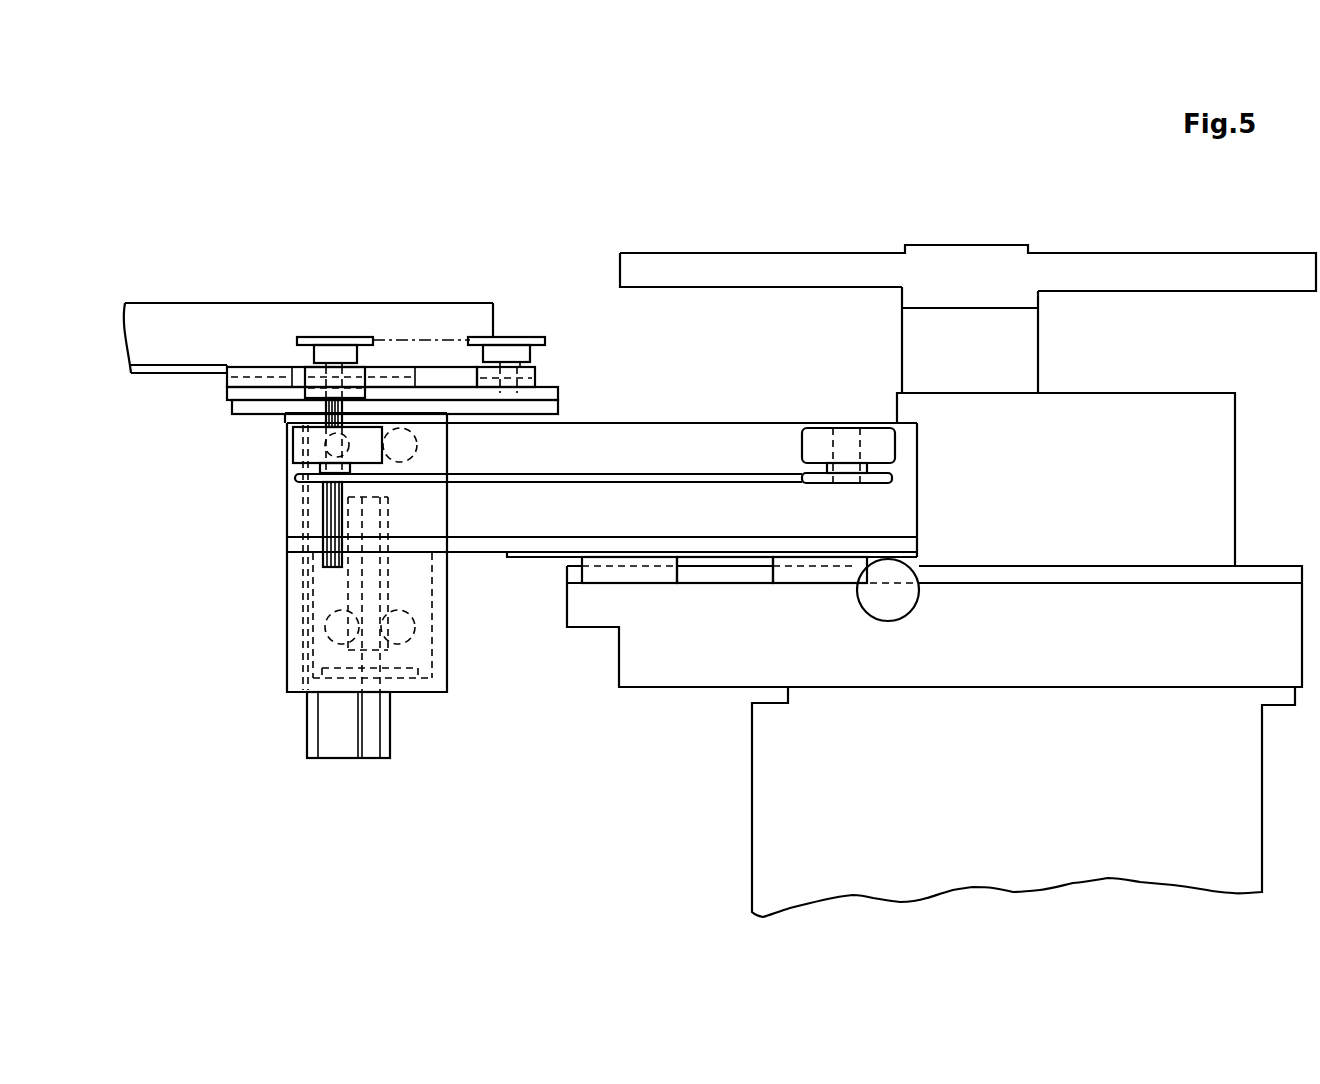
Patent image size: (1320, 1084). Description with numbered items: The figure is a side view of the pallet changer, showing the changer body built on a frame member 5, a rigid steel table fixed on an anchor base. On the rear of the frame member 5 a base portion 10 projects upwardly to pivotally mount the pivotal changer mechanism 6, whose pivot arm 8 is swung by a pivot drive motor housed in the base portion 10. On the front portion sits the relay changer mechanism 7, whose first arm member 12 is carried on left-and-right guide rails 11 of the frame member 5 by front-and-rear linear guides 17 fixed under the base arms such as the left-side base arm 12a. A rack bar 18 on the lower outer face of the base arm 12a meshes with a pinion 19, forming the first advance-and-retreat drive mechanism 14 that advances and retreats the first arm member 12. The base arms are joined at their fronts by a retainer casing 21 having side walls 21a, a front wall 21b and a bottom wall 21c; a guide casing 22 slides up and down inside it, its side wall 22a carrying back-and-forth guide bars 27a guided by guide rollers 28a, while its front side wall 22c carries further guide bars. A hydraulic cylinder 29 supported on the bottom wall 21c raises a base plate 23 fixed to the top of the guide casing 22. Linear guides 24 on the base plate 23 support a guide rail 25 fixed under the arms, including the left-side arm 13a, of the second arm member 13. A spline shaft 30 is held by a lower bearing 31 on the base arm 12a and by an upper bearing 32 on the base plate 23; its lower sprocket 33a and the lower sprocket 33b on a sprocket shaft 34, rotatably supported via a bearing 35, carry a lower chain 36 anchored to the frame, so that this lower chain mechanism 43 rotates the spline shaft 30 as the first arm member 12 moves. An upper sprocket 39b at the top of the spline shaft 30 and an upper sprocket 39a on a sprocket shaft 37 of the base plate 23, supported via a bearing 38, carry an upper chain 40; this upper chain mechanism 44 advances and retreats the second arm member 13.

The frame member 5 is at (752, 789).
The pivotal changer mechanism 6 is at (1058, 247).
The relay changer mechanism 7 is at (460, 284).
The pivot arm 8 is at (797, 253).
The base portion 10 is at (1133, 400).
The guide rails 11 is at (1133, 568).
The first arm member 12 is at (926, 458).
The left-side base arm 12a is at (722, 423).
The second arm member 13 is at (496, 328).
The left-side arm 13a is at (173, 303).
The first advance-and-retreat drive mechanism 14 is at (929, 598).
The linear guides 17 is at (656, 583).
The rack bar 18 is at (540, 560).
The pinion 19 is at (913, 606).
The retainer casing 21 is at (286, 617).
The left-and-right side walls 21a is at (318, 652).
The front wall 21b is at (287, 587).
The bottom wall 21c is at (417, 687).
The guide casing 22 is at (308, 717).
The left-side side wall 22a is at (330, 743).
The front side wall 22c is at (308, 740).
The base plate 23 is at (558, 393).
The linear guides 24 is at (225, 382).
The guide rail 25 is at (160, 375).
The back-and-forth guide bars 27a is at (372, 750).
The guide rollers 28a is at (415, 458).
The hydraulic cylinder 29 is at (390, 583).
The spline shaft 30 is at (323, 508).
The lower bearing 31 is at (287, 448).
The upper bearing 32 is at (307, 388).
The lower sprocket 33a is at (292, 478).
The lower sprocket 33b is at (893, 478).
The sprocket shaft 34 is at (867, 427).
The bearing 35 is at (895, 440).
The lower chain 36 is at (650, 473).
The sprocket shaft 37 is at (538, 373).
The bearing 38 is at (537, 381).
The upper sprocket 39a is at (548, 343).
The upper sprocket 39b is at (297, 338).
The upper chain 40 is at (408, 337).
The lower chain mechanism 43 is at (617, 458).
The upper chain mechanism 44 is at (422, 338).